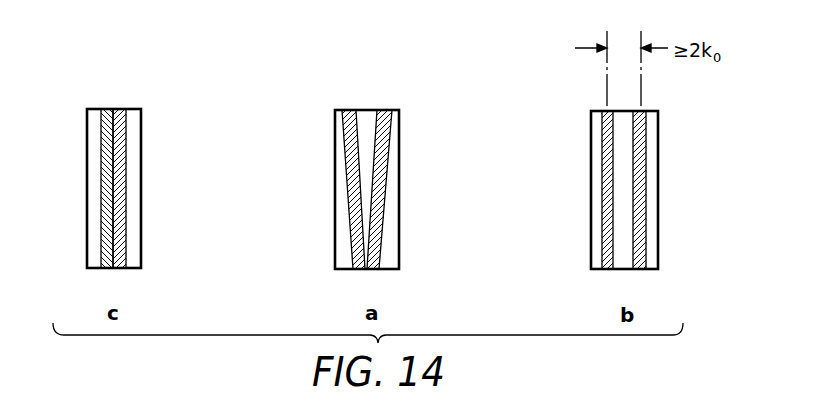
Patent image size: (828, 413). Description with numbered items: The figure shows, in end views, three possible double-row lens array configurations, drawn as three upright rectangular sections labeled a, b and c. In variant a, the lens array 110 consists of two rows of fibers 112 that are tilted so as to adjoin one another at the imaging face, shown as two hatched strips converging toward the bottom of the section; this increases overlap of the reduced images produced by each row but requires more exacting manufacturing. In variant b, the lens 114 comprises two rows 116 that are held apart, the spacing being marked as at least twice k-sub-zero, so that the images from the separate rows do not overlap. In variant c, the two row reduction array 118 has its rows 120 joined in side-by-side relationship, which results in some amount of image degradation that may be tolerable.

The lens array 110 is at (405, 178).
The tapered guiding regions 112 is at (383, 110).
The lens 114 is at (724, 187).
The rows 116 is at (608, 270).
The two row reduction array 118 is at (148, 177).
The rows 120 is at (117, 109).